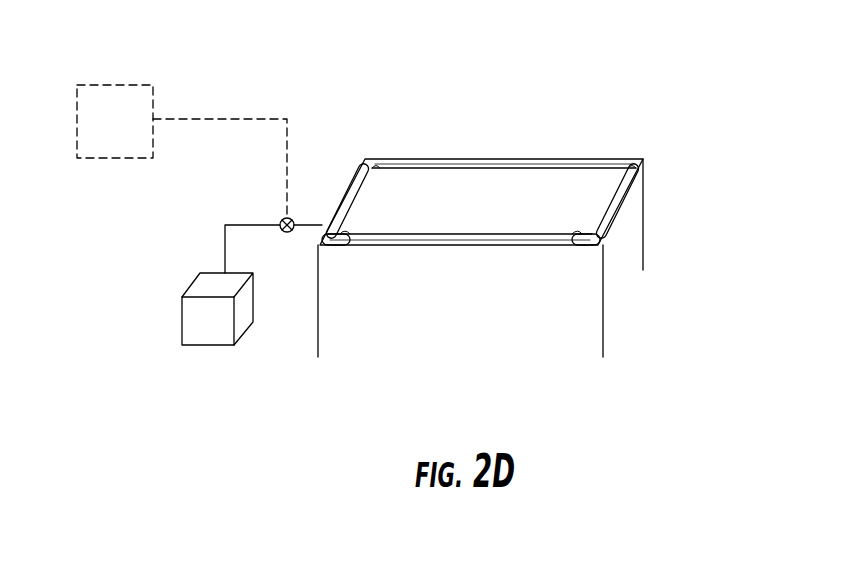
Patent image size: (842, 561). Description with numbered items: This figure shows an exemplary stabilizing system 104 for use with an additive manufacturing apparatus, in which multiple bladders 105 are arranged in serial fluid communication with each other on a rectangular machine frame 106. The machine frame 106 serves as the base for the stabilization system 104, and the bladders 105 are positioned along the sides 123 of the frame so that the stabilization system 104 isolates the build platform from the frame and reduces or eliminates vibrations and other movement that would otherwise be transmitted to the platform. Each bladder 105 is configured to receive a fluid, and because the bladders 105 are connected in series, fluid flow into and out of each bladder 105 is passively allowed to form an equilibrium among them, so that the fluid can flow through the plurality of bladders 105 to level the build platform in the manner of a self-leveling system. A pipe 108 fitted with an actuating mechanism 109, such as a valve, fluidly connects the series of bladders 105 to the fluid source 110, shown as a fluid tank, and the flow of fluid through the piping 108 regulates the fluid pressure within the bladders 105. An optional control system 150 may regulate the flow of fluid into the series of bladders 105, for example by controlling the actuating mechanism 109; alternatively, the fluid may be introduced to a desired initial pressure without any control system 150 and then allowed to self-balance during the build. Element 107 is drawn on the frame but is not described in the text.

The stabilization system 104 is at (682, 156).
The bladder 105 is at (615, 193).
The machine frame 106 is at (465, 167).
The frame tubes 107 is at (367, 158).
The piping 108 is at (313, 222).
The actuating mechanism 109 is at (285, 250).
The fluid source 110 is at (206, 327).
The side 123 is at (358, 207).
The control system 150 is at (103, 150).